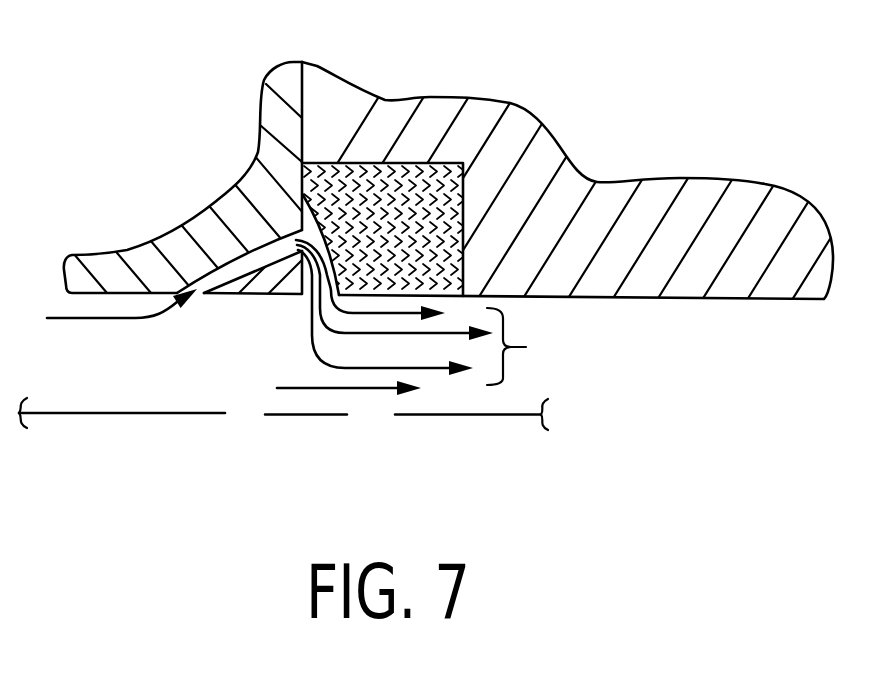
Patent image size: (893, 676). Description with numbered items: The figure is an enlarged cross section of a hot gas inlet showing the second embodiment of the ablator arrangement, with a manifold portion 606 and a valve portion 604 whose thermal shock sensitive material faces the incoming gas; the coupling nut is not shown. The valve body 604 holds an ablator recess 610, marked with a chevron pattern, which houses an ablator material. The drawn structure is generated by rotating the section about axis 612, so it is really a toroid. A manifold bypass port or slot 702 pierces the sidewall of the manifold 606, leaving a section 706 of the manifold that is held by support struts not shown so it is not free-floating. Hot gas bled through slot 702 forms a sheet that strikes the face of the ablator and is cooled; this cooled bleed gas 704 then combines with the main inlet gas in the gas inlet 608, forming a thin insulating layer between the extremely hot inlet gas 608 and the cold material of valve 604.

The valve body 604 is at (734, 194).
The inlet manifold 606 is at (206, 230).
The gas inlet 608 is at (318, 392).
The ablator recess 610 is at (434, 199).
The axis 612 is at (70, 414).
The manifold bypass port 702 is at (238, 283).
The cooled bleed gas 704 is at (423, 317).
The section of manifold 706 is at (285, 274).